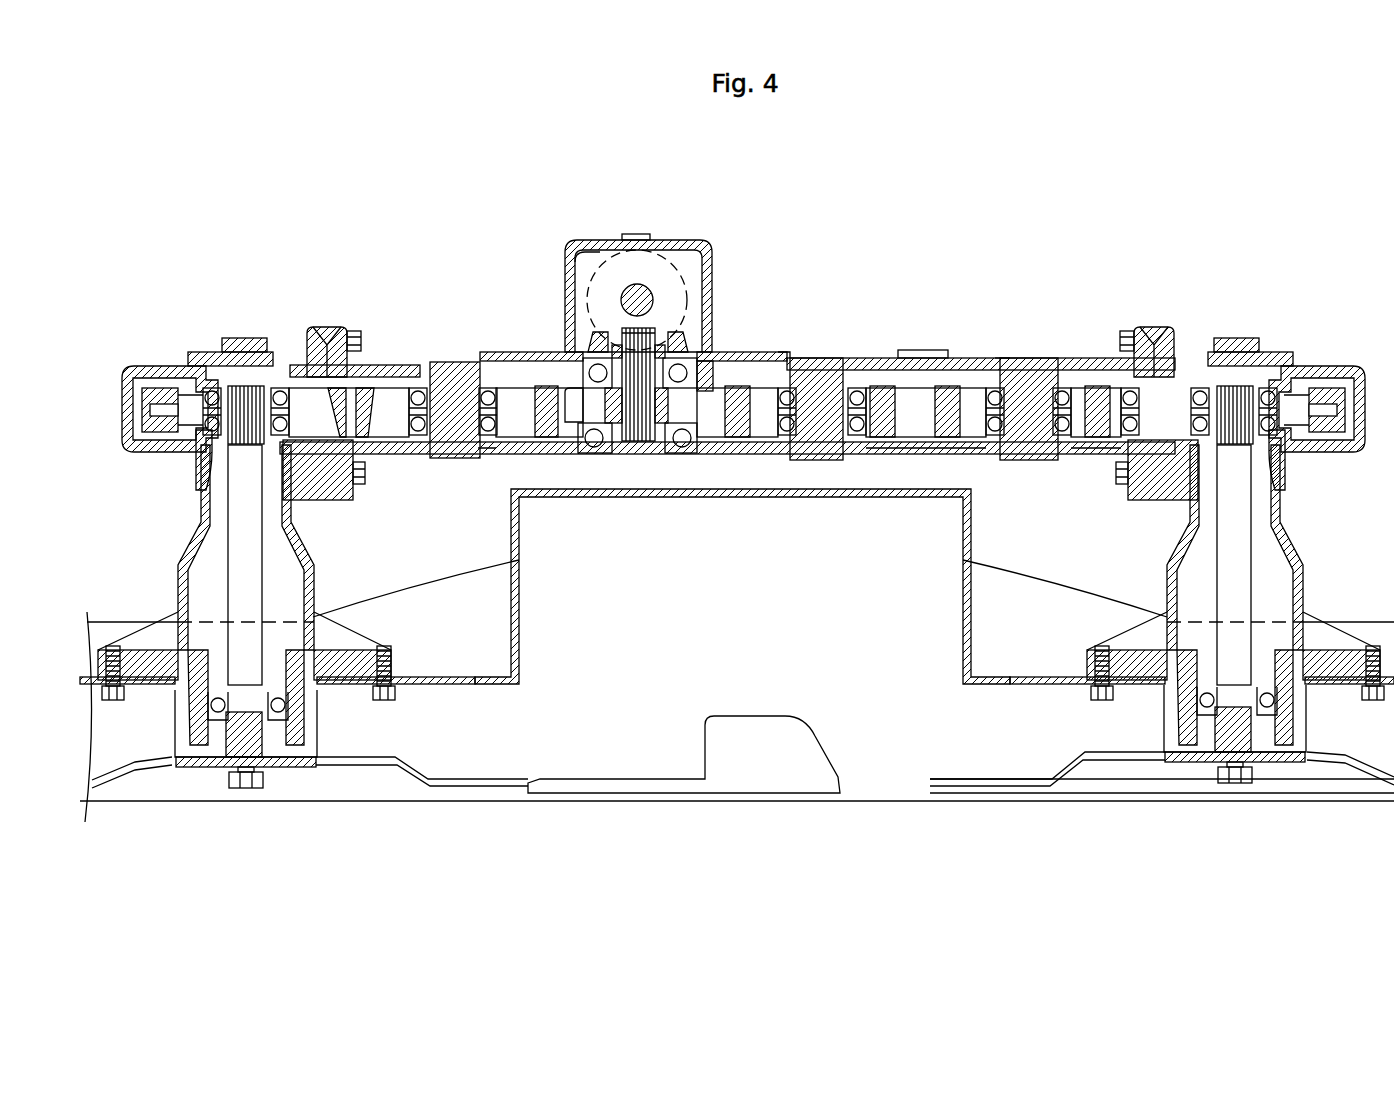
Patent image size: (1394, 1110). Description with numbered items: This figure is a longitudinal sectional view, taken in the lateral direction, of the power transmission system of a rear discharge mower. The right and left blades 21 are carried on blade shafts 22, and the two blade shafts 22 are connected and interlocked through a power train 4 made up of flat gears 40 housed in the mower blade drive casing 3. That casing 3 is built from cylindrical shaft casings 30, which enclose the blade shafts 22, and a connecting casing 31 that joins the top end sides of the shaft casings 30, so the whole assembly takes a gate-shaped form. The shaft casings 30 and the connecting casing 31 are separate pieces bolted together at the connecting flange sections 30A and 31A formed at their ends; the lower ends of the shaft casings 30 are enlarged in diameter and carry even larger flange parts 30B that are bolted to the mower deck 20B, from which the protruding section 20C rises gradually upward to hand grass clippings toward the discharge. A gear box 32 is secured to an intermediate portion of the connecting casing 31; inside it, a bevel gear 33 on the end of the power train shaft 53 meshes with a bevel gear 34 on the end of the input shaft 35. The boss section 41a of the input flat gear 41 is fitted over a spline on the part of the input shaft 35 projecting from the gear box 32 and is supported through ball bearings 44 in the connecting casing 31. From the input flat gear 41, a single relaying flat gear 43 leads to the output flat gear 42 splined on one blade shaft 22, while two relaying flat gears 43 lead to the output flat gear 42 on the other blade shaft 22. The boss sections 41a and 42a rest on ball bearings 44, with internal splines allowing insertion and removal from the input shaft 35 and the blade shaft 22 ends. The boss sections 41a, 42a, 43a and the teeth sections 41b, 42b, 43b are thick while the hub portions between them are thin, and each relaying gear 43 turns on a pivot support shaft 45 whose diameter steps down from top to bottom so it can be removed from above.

The mower blade drive casing 3 is at (788, 350).
The power train 4 is at (1005, 360).
The mower deck 20B is at (468, 668).
The protruding section 20C is at (612, 460).
The blade 21 is at (592, 778).
The blade shaft 22 is at (253, 533).
The cylindrical shaft casing 30 is at (200, 540).
The connecting flange section 30A is at (318, 327).
The flange part 30B is at (398, 662).
The connecting casing 31 is at (968, 365).
The connecting flange section 31A is at (348, 328).
The gear box 32 is at (668, 242).
The bevel gear 33 is at (688, 300).
The bevel gear 34 is at (598, 345).
The input shaft 35 is at (650, 455).
The flat gear 40 is at (750, 349).
The input flat gear 41 is at (570, 455).
The boss section 41a is at (612, 455).
The teeth section 41b is at (808, 460).
The output flat gear 42 is at (148, 366).
The boss section 42a is at (228, 440).
The teeth section 42b is at (340, 450).
The relaying flat gear 43 is at (385, 382).
The boss section 43a is at (490, 448).
The teeth section 43b is at (727, 448).
The ball bearing 44 is at (282, 388).
The pivot support shaft 45 is at (466, 368).
The power train shaft 53 is at (597, 245).